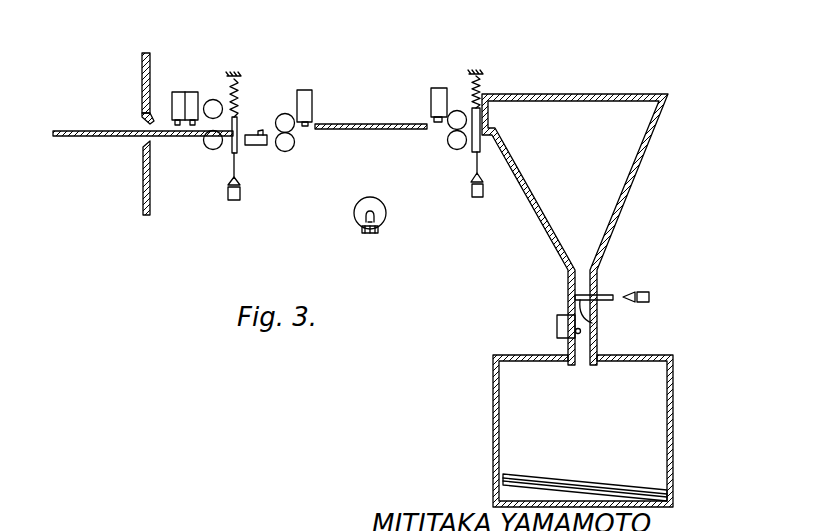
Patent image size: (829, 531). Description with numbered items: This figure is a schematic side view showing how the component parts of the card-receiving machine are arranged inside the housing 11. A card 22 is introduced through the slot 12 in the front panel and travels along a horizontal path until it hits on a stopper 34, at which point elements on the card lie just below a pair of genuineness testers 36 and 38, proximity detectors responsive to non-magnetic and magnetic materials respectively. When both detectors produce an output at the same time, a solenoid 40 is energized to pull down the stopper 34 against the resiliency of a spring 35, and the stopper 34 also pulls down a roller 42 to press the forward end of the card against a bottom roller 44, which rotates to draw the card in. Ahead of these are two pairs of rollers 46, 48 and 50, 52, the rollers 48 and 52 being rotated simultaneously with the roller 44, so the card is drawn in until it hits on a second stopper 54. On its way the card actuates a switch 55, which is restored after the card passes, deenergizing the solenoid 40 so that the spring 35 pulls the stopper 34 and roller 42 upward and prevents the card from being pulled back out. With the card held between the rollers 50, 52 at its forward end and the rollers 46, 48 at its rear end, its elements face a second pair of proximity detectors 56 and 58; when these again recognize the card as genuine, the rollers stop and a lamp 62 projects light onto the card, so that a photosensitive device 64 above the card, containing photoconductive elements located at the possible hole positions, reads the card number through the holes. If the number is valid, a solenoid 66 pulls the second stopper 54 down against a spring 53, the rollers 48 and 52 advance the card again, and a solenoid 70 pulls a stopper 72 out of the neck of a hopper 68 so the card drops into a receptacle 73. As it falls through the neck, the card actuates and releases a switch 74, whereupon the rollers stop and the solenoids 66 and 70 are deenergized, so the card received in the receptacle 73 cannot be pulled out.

The housing 11 is at (142, 70).
The slot 12 is at (141, 123).
The card 22 is at (90, 138).
The stopper 34 is at (238, 150).
The spring 35 is at (238, 95).
The genuineness tester 36 is at (192, 100).
The genuineness tester 38 is at (178, 92).
The solenoid 40 is at (233, 200).
The roller 42 is at (212, 112).
The bottom roller 44 is at (213, 146).
The roller 46 is at (285, 113).
The roller 48 is at (292, 142).
The roller 50 is at (458, 110).
The roller 52 is at (452, 141).
The spring 53 is at (481, 90).
The second stopper 54 is at (473, 153).
The switch 55 is at (257, 146).
The proximity detector 56 is at (440, 88).
The proximity detector 58 is at (310, 103).
The lamp 62 is at (386, 213).
The photosensitive device 64 is at (367, 124).
The solenoid 66 is at (478, 197).
The hopper 68 is at (624, 208).
The solenoid 70 is at (656, 280).
The stopper 72 is at (597, 325).
The receptacle 73 is at (493, 413).
The switch 74 is at (557, 331).